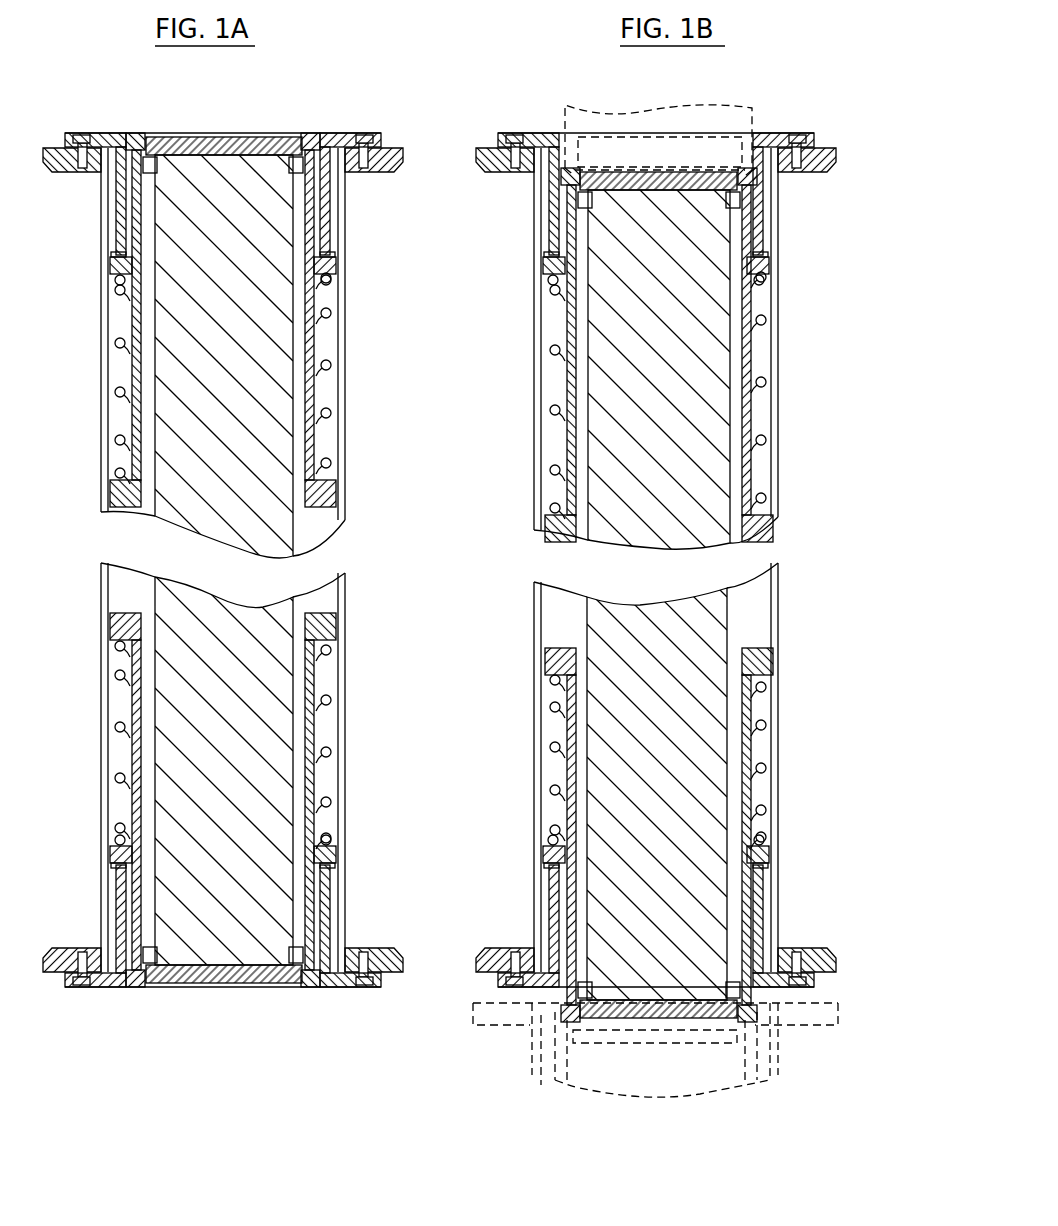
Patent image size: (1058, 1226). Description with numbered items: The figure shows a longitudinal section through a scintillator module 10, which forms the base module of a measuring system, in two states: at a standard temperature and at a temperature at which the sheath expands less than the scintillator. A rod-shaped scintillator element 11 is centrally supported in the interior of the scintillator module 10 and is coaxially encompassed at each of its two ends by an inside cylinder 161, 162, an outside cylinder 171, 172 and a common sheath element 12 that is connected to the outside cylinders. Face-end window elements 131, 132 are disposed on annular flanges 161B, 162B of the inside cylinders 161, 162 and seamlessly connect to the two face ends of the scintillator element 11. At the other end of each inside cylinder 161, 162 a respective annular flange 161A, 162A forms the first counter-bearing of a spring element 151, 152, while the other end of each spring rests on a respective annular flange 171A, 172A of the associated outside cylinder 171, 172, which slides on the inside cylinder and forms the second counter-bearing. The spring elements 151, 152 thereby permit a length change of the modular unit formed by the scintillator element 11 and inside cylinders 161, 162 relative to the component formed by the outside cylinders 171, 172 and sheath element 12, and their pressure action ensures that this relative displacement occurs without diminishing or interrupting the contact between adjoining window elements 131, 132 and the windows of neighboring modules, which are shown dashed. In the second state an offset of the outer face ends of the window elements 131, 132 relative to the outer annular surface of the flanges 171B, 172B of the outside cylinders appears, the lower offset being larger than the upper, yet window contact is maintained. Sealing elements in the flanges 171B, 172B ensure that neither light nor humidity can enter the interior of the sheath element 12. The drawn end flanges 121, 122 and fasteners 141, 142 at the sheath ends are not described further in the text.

In FIG. 1A, the scintillator module 10 is at (493, 415).
In FIG. 1A, the scintillator element 11 is at (237, 417).
In FIG. 1B, the scintillator element 11 is at (682, 407).
In FIG. 1A, the sheath element 12 is at (345, 472).
In FIG. 1B, the sheath element 12 is at (540, 690).
In FIG. 1A, the upper flange 121 is at (382, 163).
In FIG. 1B, the upper flange 121 is at (530, 170).
In FIG. 1A, the lower flange 122 is at (377, 962).
In FIG. 1B, the lower flange 122 is at (493, 962).
In FIG. 1A, the window element 131 is at (240, 142).
In FIG. 1B, the window element 131 is at (732, 183).
In FIG. 1A, the window element 132 is at (197, 985).
In FIG. 1B, the window element 132 is at (653, 1015).
In FIG. 1A, the upper screws 141 is at (78, 170).
In FIG. 1B, the upper screws 141 is at (656, 151).
In FIG. 1A, the lower screws 142 is at (76, 952).
In FIG. 1B, the lower screws 142 is at (656, 968).
In FIG. 1A, the spring element 151 is at (330, 365).
In FIG. 1B, the spring element 151 is at (553, 357).
In FIG. 1A, the spring element 152 is at (345, 752).
In FIG. 1B, the spring element 152 is at (535, 743).
In FIG. 1A, the inside cylinder 161 is at (322, 335).
In FIG. 1B, the inside cylinder 161 is at (560, 330).
In FIG. 1A, the annular flange 161A is at (340, 497).
In FIG. 1B, the annular flange 161A is at (540, 522).
In FIG. 1A, the annular flange 161B is at (312, 143).
In FIG. 1B, the annular flange 161B is at (659, 176).
In FIG. 1A, the inside cylinder 162 is at (308, 780).
In FIG. 1B, the inside cylinder 162 is at (563, 772).
In FIG. 1A, the annular flange 162A is at (330, 622).
In FIG. 1B, the annular flange 162A is at (547, 650).
In FIG. 1A, the annular flange 162B is at (307, 982).
In FIG. 1B, the annular flange 162B is at (560, 1015).
In FIG. 1A, the outside cylinder 171 is at (330, 243).
In FIG. 1B, the outside cylinder 171 is at (548, 230).
In FIG. 1A, the annular flange 171A is at (110, 270).
In FIG. 1B, the annular flange 171A is at (760, 272).
In FIG. 1A, the annular flange 171B is at (108, 142).
In FIG. 1B, the annular flange 171B is at (540, 137).
In FIG. 1A, the outside cylinder 172 is at (327, 887).
In FIG. 1B, the outside cylinder 172 is at (550, 897).
In FIG. 1A, the annular flange 172A is at (345, 842).
In FIG. 1B, the annular flange 172A is at (540, 848).
In FIG. 1A, the annular flange 172B is at (107, 988).
In FIG. 1B, the annular flange 172B is at (656, 980).